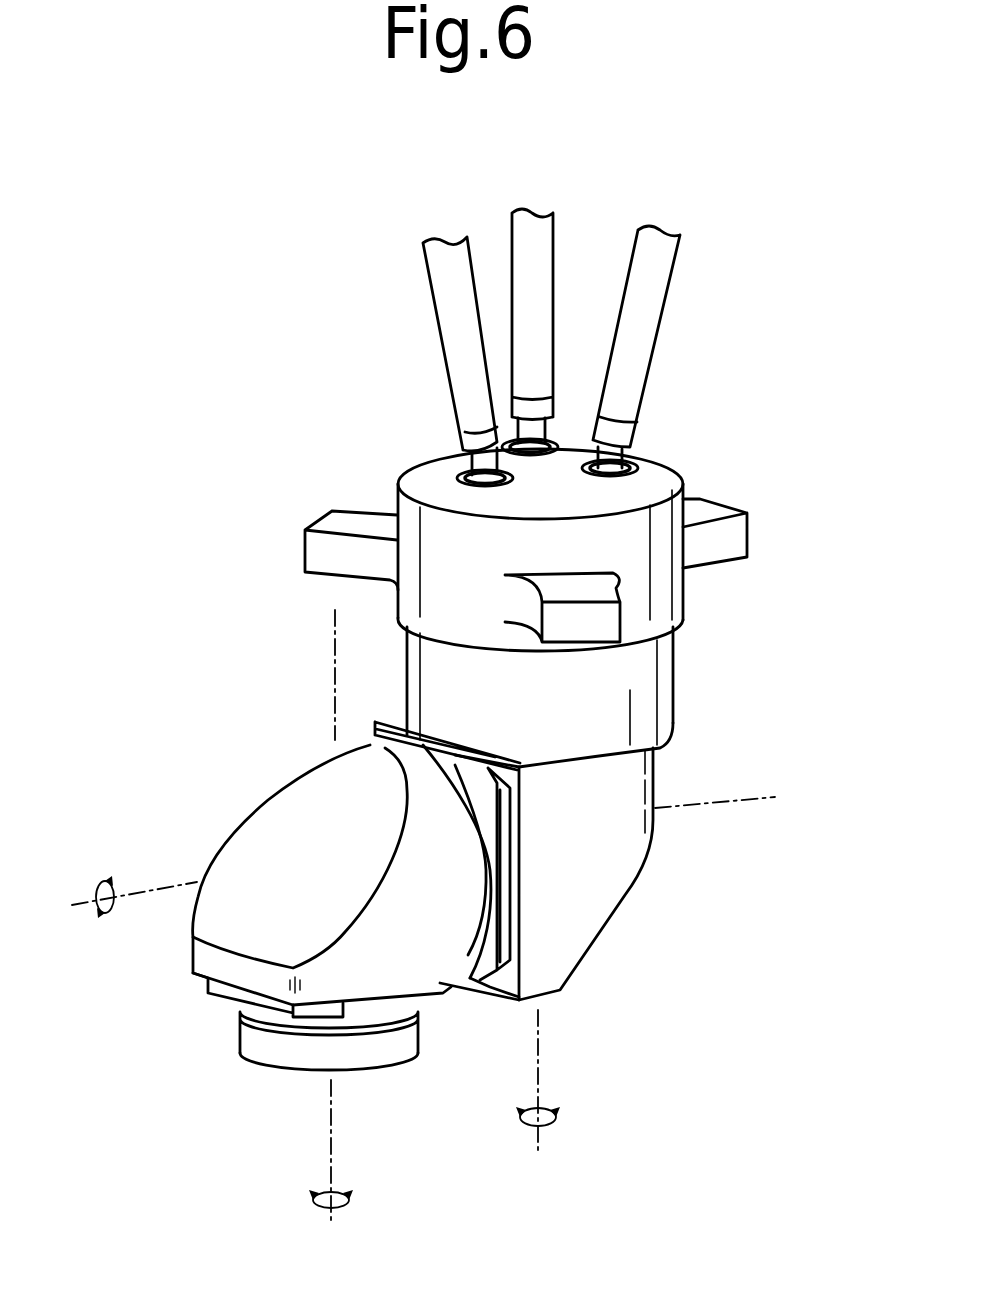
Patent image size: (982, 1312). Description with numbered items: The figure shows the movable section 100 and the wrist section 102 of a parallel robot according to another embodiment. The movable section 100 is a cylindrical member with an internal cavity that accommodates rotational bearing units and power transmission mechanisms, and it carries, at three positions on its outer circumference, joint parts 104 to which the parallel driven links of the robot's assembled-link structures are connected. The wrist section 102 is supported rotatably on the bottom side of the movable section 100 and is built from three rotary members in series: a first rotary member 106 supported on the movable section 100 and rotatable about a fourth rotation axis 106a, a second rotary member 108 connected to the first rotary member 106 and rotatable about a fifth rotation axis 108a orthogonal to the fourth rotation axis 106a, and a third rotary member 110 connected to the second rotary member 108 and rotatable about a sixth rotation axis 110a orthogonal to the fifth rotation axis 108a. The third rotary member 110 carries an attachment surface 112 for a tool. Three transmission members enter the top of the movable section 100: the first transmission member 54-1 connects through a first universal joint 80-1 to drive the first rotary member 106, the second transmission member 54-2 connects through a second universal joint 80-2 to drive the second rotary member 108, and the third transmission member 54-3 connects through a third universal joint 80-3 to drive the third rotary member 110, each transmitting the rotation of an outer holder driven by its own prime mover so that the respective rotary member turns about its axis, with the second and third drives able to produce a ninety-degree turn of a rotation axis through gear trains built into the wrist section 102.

The first transmission member 54-1 is at (657, 267).
The second transmission member 54-2 is at (543, 245).
The third transmission member 54-3 is at (427, 267).
The first universal joint 80-1 is at (620, 442).
The second universal joint 80-2 is at (560, 437).
The third universal joint 80-3 is at (450, 430).
The movable section 100 is at (407, 507).
The wrist section 102 is at (613, 1003).
The joint parts 104 is at (310, 557).
The first rotary member 106 is at (607, 883).
The fourth rotation axis 106a is at (545, 1137).
The second rotary member 108 is at (272, 820).
The fifth rotation axis 108a is at (175, 883).
The third rotary member 110 is at (245, 1035).
The sixth rotation axis 110a is at (323, 1123).
The attachment surface 112 is at (367, 1068).